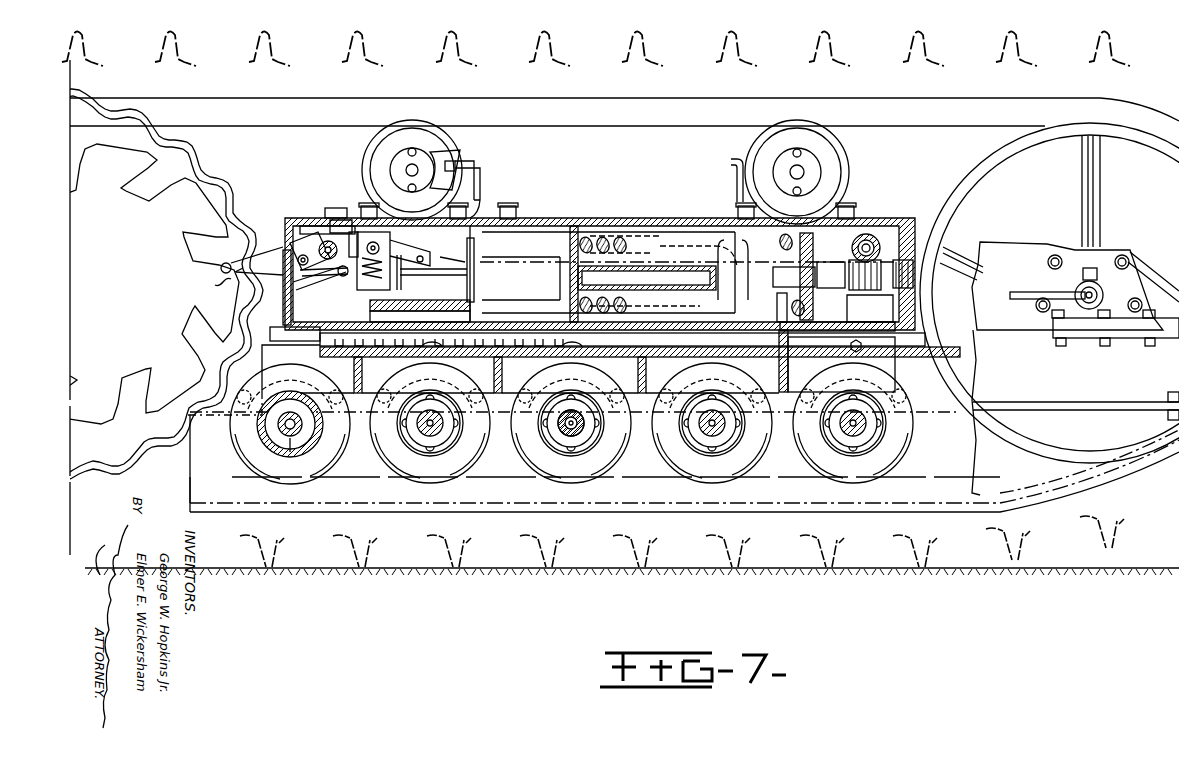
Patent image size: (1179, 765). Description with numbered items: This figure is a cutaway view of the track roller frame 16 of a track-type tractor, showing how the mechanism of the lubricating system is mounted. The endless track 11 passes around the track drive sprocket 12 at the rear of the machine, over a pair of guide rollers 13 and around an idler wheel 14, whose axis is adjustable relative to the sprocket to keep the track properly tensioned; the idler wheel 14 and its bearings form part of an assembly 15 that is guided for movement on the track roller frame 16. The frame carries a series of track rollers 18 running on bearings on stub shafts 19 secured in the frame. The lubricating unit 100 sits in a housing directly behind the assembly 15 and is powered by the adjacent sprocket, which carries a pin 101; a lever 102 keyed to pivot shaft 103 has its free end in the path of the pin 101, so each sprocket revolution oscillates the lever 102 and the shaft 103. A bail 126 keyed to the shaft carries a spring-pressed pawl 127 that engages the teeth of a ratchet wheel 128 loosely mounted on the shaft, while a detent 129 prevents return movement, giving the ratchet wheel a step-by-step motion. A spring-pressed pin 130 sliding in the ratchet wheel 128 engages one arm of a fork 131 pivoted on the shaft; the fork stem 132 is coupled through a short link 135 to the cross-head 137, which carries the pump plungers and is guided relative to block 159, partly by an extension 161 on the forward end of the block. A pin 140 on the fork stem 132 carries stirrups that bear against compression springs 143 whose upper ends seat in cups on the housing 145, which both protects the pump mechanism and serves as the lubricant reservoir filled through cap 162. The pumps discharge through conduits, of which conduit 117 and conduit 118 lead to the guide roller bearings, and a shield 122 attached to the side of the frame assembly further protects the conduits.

The endless track 11 is at (1130, 525).
The track drive sprocket 12 is at (158, 200).
The guide rollers 13 is at (372, 145).
The idler wheel 14 is at (968, 180).
The idler wheel assembly 15 is at (896, 212).
The track roller frame 16 is at (1066, 384).
The track rollers 18 is at (608, 462).
The stub shafts 19 is at (562, 430).
The lubricating unit 100 is at (520, 235).
The pin 101 is at (222, 262).
The lever 102 is at (218, 296).
The pivot shaft 103 is at (336, 247).
The conduit 117 is at (730, 190).
The conduit 118 is at (478, 158).
The shield 122 is at (1123, 455).
The bail 126 is at (297, 246).
The spring-pressed pawl 127 is at (318, 250).
The ratchet wheel 128 is at (326, 248).
The detent 129 is at (346, 273).
The pin 130 is at (340, 243).
The fork 131 is at (353, 240).
The fork stem 132 is at (400, 262).
The short link 135 is at (434, 272).
The cross-head 137 is at (470, 260).
The pin 140 is at (393, 243).
The compression springs 143 is at (380, 265).
The housing 145 is at (474, 200).
The block 159 is at (470, 310).
The extension 161 is at (470, 268).
The cap 162 is at (507, 210).